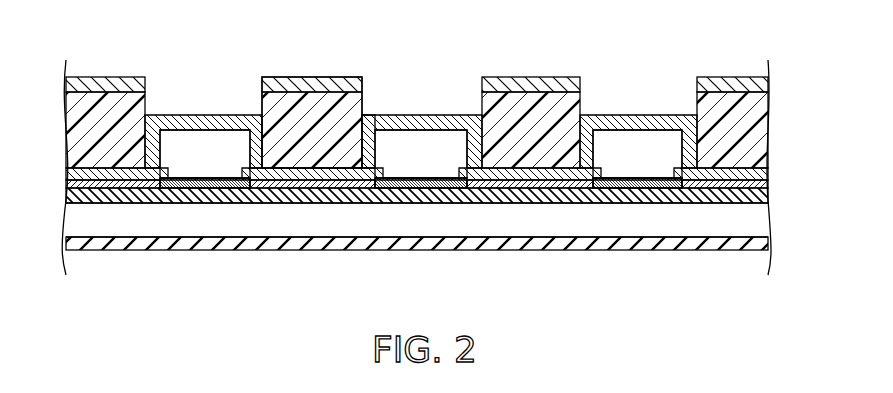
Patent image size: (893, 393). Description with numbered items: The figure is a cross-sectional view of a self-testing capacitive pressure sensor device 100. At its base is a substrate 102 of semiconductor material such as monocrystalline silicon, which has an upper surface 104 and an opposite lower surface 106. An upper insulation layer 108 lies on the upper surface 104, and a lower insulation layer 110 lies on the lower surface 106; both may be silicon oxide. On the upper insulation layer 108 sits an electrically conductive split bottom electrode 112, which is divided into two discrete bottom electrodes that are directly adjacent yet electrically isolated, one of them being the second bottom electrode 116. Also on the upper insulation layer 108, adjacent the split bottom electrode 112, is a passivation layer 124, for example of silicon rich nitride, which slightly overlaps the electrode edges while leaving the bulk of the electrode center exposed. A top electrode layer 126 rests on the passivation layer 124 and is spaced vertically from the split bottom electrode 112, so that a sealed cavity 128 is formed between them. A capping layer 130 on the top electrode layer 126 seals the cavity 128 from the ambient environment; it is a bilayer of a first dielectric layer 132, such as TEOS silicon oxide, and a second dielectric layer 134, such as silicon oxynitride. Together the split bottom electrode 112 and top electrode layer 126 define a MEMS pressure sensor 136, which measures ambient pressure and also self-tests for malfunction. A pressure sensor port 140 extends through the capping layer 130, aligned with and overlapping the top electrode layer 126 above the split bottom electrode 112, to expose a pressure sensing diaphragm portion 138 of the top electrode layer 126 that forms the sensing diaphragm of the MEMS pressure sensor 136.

The self-testing capacitive pressure sensor device 100 is at (134, 297).
The substrate 102 is at (706, 230).
The upper surface 104 is at (658, 204).
The lower surface 106 is at (738, 233).
The upper insulation layer 108 is at (131, 201).
The lower insulation layer 110 is at (139, 246).
The split bottom electrode 112 is at (208, 190).
The second bottom electrode 116 is at (421, 183).
The passivation layer 124 is at (78, 168).
The top electrode layer 126 is at (379, 113).
The sealed cavity 128 is at (222, 160).
The capping layer 130 is at (315, 92).
The first dielectric layer 132 is at (282, 100).
The second dielectric layer 134 is at (417, 92).
The MEMS pressure sensor 136 is at (417, 92).
The pressure sensing diaphragm portion 138 is at (222, 114).
The pressure sensor port 140 is at (421, 111).